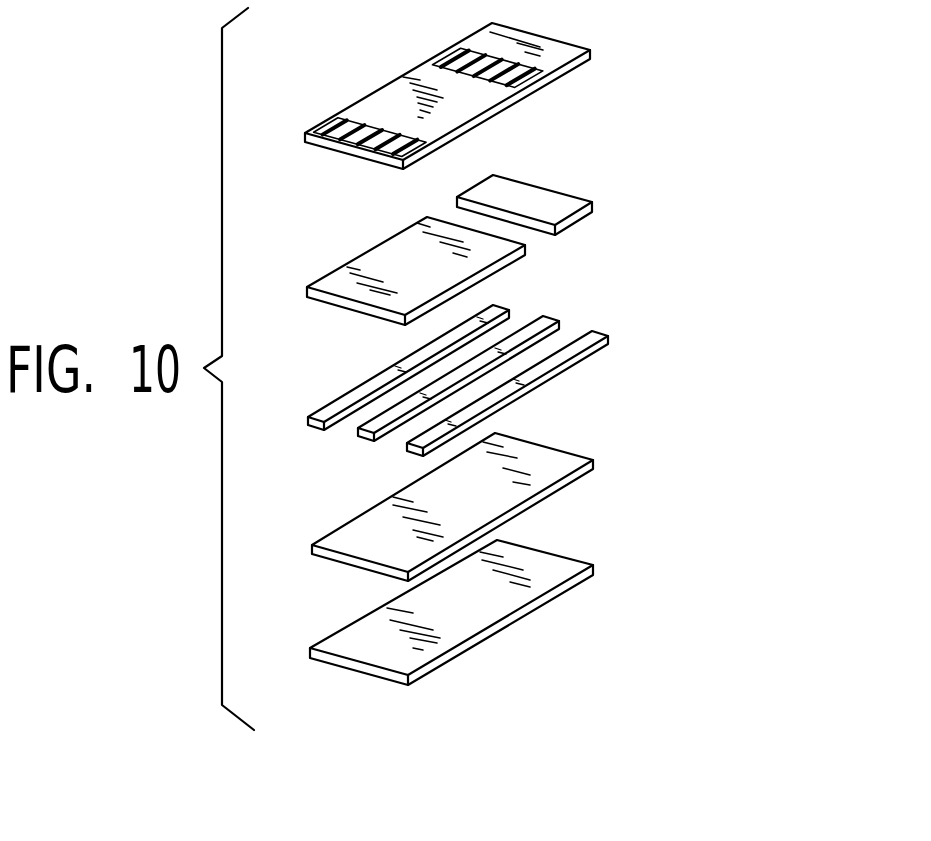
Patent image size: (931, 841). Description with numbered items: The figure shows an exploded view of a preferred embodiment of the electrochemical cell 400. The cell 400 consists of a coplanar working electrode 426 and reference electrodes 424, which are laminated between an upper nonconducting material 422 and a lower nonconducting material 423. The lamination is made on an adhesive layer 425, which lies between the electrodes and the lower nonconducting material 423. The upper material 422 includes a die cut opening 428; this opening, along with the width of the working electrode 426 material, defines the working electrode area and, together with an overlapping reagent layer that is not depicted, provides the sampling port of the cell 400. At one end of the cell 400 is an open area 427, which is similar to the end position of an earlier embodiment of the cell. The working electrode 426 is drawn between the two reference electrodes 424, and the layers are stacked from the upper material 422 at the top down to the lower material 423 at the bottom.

The cell 400 is at (614, 29).
The upper nonconducting material 422 is at (540, 212).
The lower nonconducting material 423 is at (567, 568).
The reference electrodes 424 is at (372, 385).
The adhesive layer 425 is at (570, 457).
The working electrode 426 is at (543, 320).
The open area 427 is at (380, 143).
The die cut opening 428 is at (467, 62).